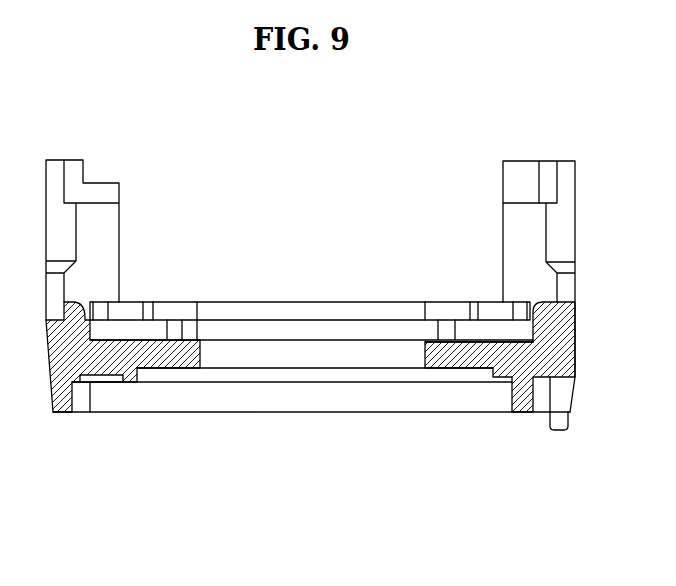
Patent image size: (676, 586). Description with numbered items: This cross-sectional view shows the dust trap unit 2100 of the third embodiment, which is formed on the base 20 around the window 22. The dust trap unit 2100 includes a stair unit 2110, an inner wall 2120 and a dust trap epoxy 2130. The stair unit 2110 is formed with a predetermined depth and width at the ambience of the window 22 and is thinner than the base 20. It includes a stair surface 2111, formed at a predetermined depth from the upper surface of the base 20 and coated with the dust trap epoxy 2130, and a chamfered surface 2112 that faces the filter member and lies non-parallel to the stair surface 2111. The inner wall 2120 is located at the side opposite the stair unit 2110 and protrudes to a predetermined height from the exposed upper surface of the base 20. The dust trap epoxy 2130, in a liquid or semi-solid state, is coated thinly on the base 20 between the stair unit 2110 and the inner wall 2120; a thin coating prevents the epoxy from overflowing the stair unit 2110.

The base 20 is at (424, 125).
The window 22 is at (196, 350).
The dust trap unit 2100 is at (321, 438).
The stair unit 2110 is at (292, 424).
The stair surface 2111 is at (448, 432).
The chamfered surface 2112 is at (375, 456).
The inner wall 2120 is at (548, 428).
The dust trap epoxy 2130 is at (505, 342).